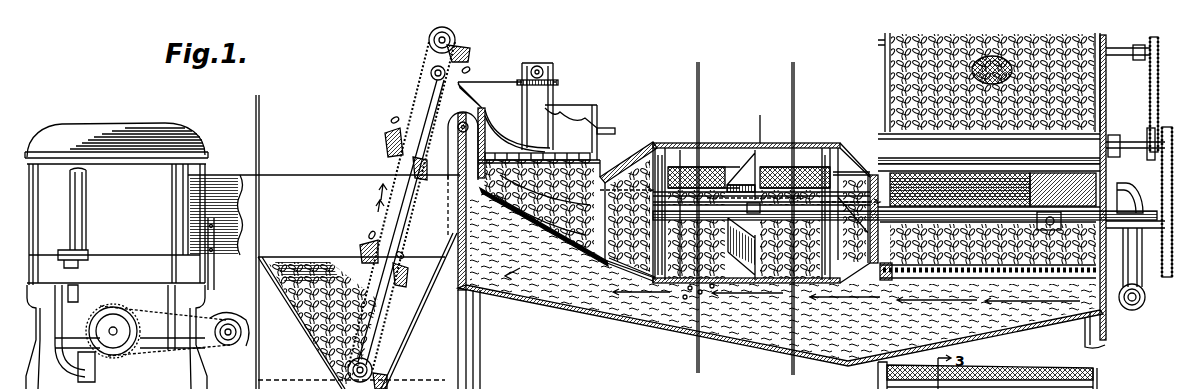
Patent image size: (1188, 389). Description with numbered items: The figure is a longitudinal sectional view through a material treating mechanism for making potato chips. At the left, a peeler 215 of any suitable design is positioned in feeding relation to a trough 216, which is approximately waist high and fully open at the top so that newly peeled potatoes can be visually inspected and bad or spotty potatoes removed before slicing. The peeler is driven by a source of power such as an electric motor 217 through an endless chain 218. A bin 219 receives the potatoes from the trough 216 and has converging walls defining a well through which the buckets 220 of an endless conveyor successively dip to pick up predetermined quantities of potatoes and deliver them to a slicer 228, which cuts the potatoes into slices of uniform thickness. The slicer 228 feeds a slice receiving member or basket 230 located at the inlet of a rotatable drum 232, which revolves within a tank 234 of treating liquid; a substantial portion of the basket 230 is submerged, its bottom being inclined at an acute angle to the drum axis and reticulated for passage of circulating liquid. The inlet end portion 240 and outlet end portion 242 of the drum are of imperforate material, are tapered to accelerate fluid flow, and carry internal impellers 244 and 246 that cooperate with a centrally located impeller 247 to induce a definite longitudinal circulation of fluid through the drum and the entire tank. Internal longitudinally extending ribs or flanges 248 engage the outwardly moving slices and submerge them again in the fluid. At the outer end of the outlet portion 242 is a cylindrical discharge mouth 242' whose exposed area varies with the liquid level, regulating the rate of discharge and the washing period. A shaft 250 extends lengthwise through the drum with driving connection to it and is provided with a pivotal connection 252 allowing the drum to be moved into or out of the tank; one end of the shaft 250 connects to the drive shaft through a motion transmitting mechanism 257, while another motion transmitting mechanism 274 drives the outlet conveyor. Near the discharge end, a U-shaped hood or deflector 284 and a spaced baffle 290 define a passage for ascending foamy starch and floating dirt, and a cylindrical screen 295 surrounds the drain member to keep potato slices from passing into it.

The peeler 215 is at (116, 256).
The trough 216 is at (324, 282).
The electric motor 217 is at (230, 353).
The endless chain 218 is at (141, 355).
The bin 219 is at (410, 325).
The buckets 220 is at (412, 268).
The slicer 228 is at (536, 120).
The slice receiving member or basket 230 is at (567, 220).
The drum 232 is at (717, 142).
The tank 234 is at (617, 321).
The inlet end portion 240 is at (637, 140).
The outlet end portion 242 is at (851, 187).
The cylindrical discharge mouth 242' is at (872, 184).
The impeller 244 is at (633, 172).
The impeller 246 is at (810, 167).
The centrally located impeller 247 is at (762, 153).
The internal longitudinally extending ribs or flanges 248 is at (704, 214).
The shaft 250 is at (685, 214).
The pivotal connection 252 is at (1048, 231).
The motion transmitting mechanism 257 is at (1162, 176).
The motion transmitting mechanism 274 is at (1146, 99).
The U-shaped hood or deflector 284 is at (878, 182).
The baffle 290 is at (989, 98).
The cylindrical screen 295 is at (1068, 180).